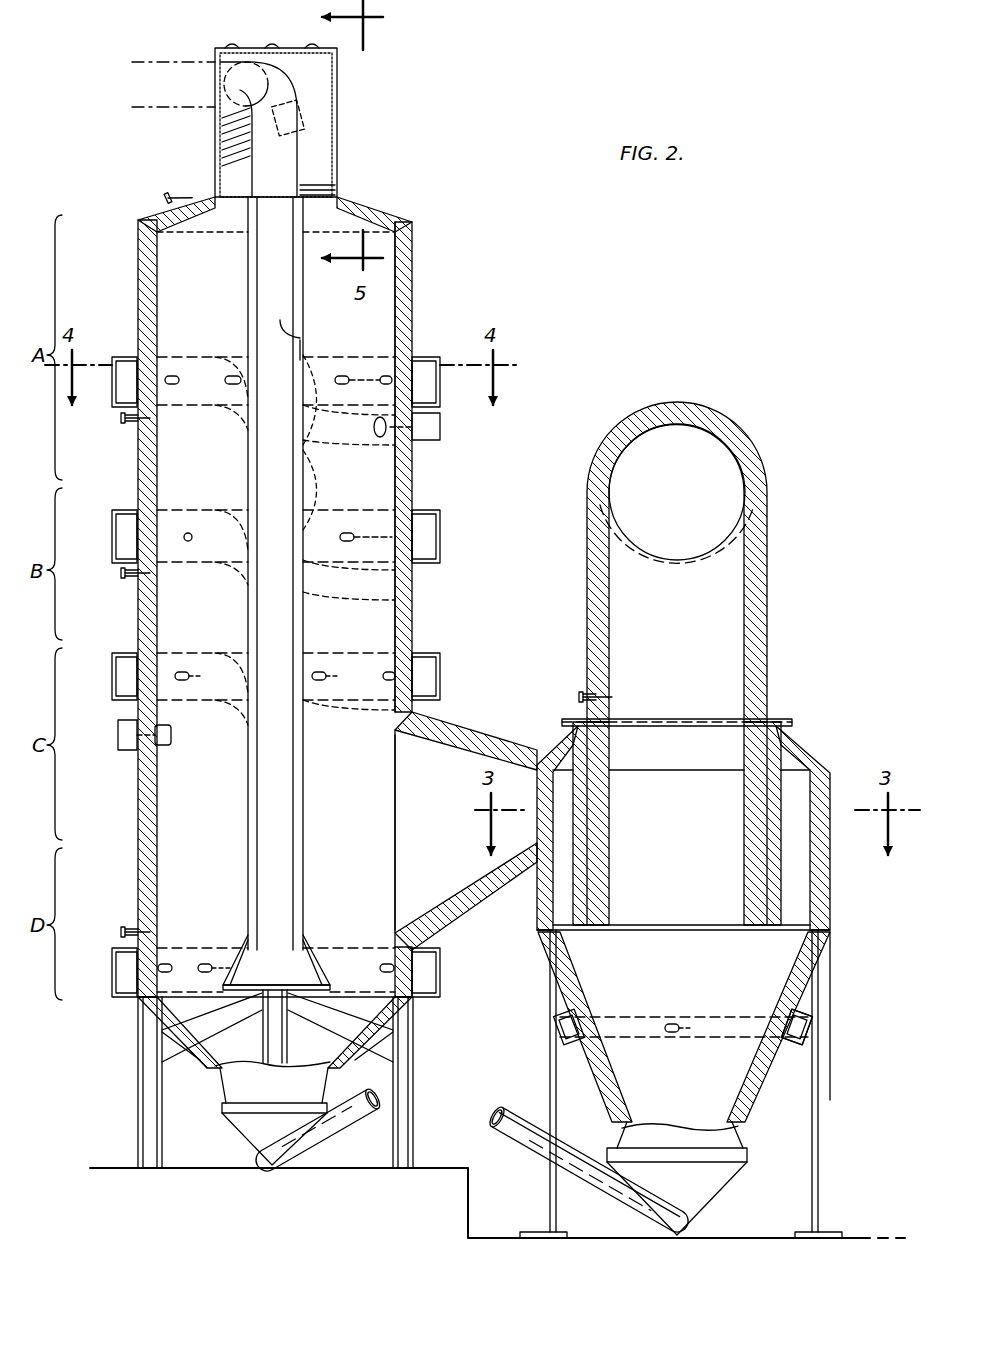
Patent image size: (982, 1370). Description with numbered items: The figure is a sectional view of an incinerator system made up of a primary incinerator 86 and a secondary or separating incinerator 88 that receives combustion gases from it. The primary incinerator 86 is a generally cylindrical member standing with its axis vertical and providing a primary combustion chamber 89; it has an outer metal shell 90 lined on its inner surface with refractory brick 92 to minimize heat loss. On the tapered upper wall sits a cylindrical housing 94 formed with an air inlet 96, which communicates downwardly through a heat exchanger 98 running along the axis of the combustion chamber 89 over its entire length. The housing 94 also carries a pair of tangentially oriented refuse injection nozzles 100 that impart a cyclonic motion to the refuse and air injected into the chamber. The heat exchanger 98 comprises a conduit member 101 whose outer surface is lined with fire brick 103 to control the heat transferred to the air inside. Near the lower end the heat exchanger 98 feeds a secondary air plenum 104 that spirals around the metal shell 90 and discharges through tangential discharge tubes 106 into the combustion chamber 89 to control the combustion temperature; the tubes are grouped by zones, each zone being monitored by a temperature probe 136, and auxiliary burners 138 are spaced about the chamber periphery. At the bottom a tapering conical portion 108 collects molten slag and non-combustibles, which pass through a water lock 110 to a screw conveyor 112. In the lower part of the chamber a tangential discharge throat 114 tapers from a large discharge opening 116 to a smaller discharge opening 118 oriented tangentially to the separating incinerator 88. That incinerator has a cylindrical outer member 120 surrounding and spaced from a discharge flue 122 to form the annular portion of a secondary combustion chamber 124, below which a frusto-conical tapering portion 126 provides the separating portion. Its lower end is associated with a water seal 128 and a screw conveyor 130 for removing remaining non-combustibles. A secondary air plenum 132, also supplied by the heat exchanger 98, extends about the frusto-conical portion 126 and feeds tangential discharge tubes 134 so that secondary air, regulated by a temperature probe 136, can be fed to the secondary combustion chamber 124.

The primary incinerator 86 is at (299, 609).
The secondary or separating incinerator 88 is at (686, 797).
The primary combustion chamber 89 is at (356, 330).
The outer metal shell 90 is at (414, 232).
The refractory brick 92 is at (400, 281).
The cylindrical housing 94 is at (340, 95).
The air inlet 96 is at (236, 80).
The heat exchanger 98 is at (248, 272).
The refuse injection nozzles 100 is at (220, 118).
The conduit member 101 is at (285, 322).
The fire brick 103 is at (300, 455).
The secondary air plenum 104 is at (414, 357).
The discharge tubes 106 is at (170, 376).
The tapering conical portion 108 is at (150, 1100).
The water lock 110 is at (245, 1122).
The screw conveyor 112 is at (335, 1120).
The tangential discharge throat 114 is at (500, 746).
The large discharge opening 116 is at (394, 810).
The smaller discharge opening 118 is at (522, 838).
The cylindrical outer member 120 is at (832, 778).
The discharge flue 122 is at (770, 678).
The secondary combustion chamber 124 is at (690, 994).
The frusto-conical tapering portion 126 is at (832, 992).
The water seal 128 is at (705, 1190).
The screw conveyor 130 is at (510, 1112).
The secondary air plenum 132 is at (808, 1040).
The discharge tubes 134 is at (580, 1015).
The temperature probes 136 is at (120, 423).
The auxiliary burners 138 is at (432, 432).